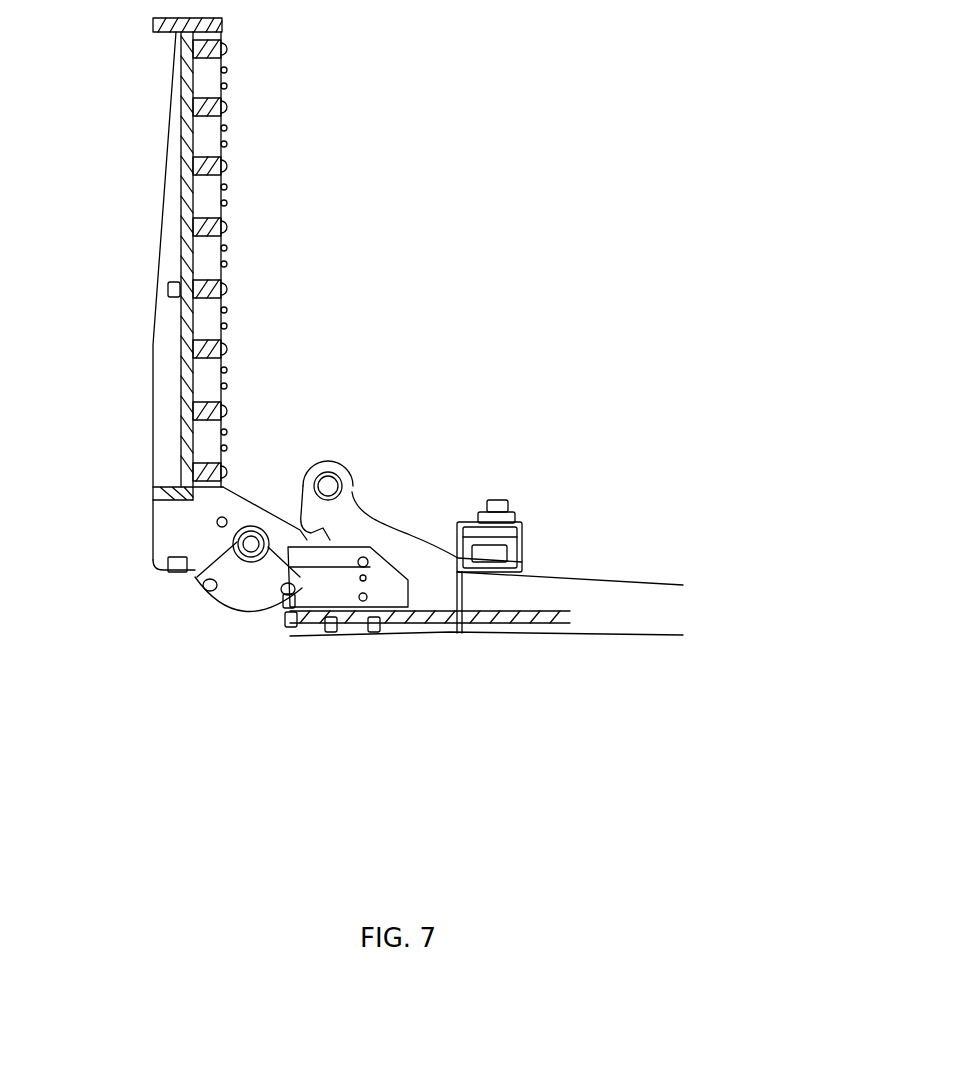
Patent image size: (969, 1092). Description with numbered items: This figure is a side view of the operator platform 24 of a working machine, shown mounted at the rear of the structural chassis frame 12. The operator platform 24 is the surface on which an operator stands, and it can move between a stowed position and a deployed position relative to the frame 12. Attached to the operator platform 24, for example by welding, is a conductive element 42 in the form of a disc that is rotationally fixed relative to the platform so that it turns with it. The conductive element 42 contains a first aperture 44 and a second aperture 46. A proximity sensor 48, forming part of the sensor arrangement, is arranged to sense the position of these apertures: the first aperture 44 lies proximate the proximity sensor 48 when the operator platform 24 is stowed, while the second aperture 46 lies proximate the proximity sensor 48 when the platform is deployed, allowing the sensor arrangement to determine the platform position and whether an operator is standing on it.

The structural chassis frame 12 is at (597, 613).
The operator platform 24 is at (165, 323).
The conductive element 42 is at (248, 603).
The first aperture 44 is at (290, 588).
The second aperture 46 is at (212, 582).
The proximity sensor 48 is at (318, 587).